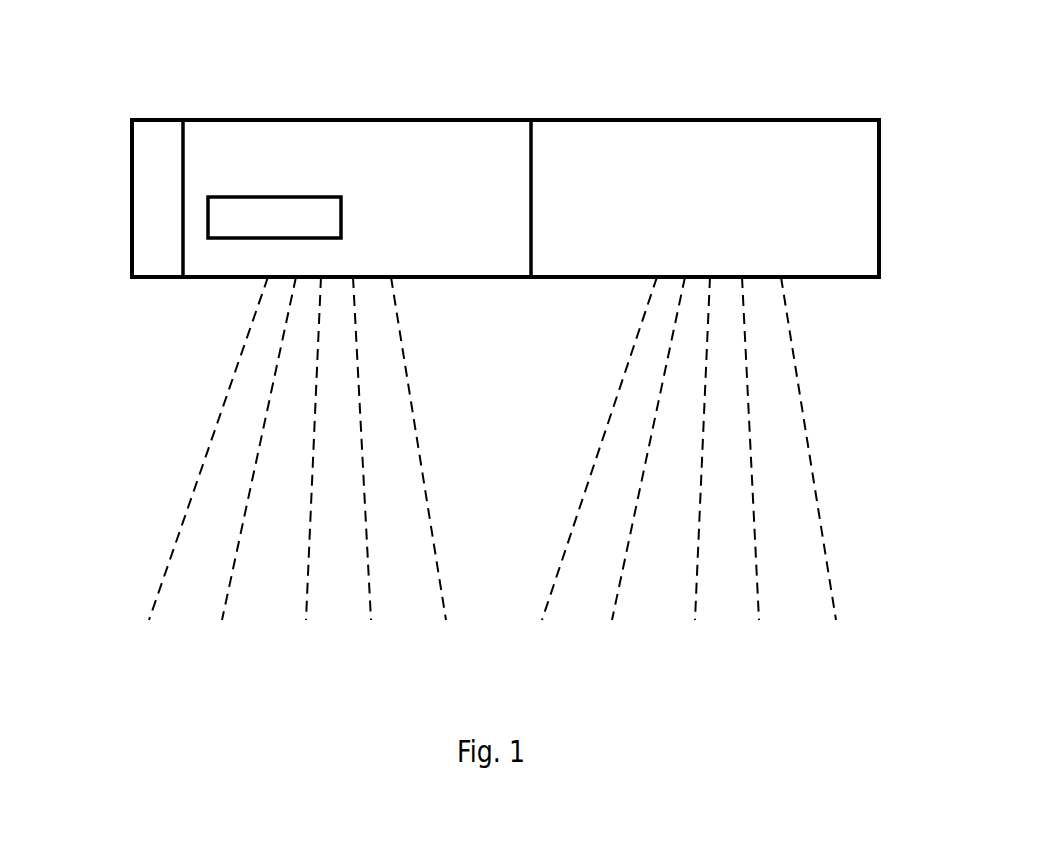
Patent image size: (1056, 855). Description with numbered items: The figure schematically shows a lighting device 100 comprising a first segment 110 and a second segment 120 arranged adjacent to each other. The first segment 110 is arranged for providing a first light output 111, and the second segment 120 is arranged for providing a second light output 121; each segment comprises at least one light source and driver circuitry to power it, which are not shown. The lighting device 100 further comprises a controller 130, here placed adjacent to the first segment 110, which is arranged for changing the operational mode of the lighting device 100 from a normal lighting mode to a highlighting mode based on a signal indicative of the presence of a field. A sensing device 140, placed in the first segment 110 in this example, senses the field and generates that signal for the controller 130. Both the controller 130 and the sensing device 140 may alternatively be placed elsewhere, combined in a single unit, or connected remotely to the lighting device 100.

The lighting device 100 is at (880, 121).
The first segment 110 is at (297, 155).
The first light output 111 is at (193, 442).
The second segment 120 is at (683, 150).
The second light output 121 is at (810, 417).
The controller 130 is at (145, 200).
The sensing device 140 is at (333, 223).